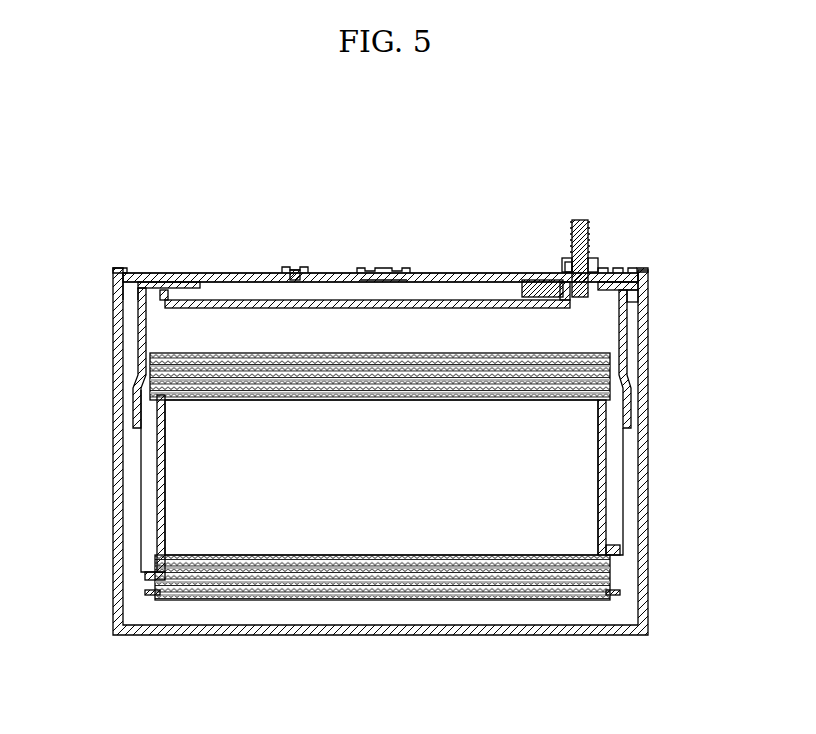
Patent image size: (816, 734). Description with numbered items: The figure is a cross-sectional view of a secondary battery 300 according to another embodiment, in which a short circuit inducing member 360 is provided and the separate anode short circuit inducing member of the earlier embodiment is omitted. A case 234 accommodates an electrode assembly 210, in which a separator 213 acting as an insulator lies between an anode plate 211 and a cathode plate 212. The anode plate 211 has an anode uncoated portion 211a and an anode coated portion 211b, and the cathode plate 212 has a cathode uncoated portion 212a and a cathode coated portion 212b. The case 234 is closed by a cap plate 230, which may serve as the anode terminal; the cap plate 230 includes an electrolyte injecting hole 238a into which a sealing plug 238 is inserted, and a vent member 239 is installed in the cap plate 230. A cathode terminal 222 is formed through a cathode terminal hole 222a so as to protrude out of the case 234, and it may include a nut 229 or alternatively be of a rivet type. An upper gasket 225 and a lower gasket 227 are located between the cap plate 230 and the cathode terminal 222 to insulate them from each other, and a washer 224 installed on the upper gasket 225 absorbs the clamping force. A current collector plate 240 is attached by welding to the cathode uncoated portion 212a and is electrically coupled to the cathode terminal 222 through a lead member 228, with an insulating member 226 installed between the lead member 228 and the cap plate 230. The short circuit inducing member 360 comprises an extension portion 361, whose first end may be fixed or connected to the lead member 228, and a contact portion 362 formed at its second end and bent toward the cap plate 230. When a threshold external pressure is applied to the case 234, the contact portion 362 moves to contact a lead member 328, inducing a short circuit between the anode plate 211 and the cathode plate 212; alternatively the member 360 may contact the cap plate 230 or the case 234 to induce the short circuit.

The secondary battery 300 is at (387, 117).
The short circuit inducing member 360 is at (435, 160).
The extension portion 361 is at (445, 300).
The contact portion 362 is at (165, 271).
The sealing plug 238 is at (288, 268).
The electrolyte injecting hole 238a is at (306, 268).
The vent member 239 is at (370, 268).
The cap plate 230 is at (480, 272).
The cathode terminal 222 is at (580, 220).
The cathode terminal hole 222a is at (565, 262).
The washer 224 is at (562, 262).
The lower gasket 227 is at (560, 280).
The upper gasket 225 is at (600, 272).
The insulating member 226 is at (640, 292).
The lead member 228 is at (638, 302).
The nut 229 is at (592, 262).
The lead member 328 is at (137, 322).
The case 234 is at (650, 447).
The current collector plate 240 is at (135, 505).
The separator 213 is at (345, 590).
The electrode assembly 210 is at (420, 540).
The anode plate 211 is at (217, 692).
The anode uncoated portion 211a is at (147, 598).
The anode coated portion 211b is at (205, 598).
The cathode plate 212 is at (555, 692).
The cathode uncoated portion 212a is at (617, 598).
The cathode coated portion 212b is at (565, 598).